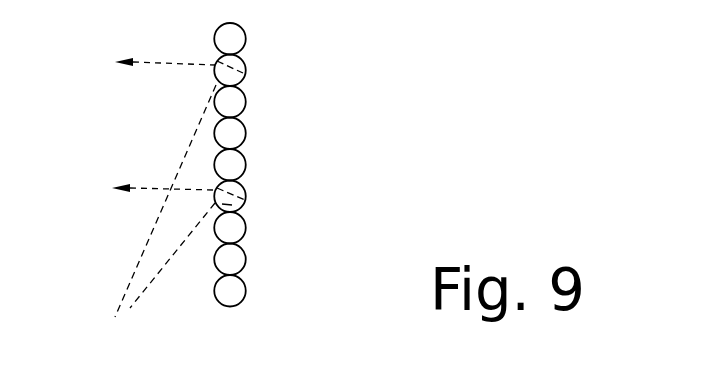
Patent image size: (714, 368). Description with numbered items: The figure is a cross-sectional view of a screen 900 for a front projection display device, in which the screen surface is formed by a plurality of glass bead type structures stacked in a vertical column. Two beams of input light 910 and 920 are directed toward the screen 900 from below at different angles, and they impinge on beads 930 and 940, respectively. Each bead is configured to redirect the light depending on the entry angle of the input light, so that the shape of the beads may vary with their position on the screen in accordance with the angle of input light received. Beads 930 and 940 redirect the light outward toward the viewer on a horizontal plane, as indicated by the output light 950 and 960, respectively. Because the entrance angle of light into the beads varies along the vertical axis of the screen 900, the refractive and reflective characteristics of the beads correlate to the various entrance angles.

The screen 900 is at (298, 84).
The input light 910 is at (125, 289).
The input light 920 is at (150, 288).
The bead 930 is at (246, 64).
The bead 940 is at (246, 194).
The redirected light 950 is at (148, 62).
The redirected light 960 is at (145, 188).